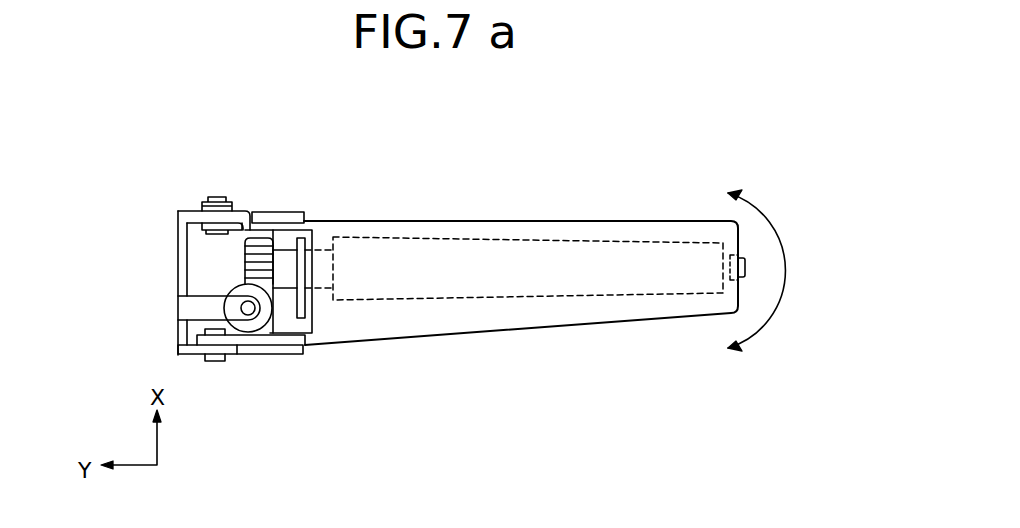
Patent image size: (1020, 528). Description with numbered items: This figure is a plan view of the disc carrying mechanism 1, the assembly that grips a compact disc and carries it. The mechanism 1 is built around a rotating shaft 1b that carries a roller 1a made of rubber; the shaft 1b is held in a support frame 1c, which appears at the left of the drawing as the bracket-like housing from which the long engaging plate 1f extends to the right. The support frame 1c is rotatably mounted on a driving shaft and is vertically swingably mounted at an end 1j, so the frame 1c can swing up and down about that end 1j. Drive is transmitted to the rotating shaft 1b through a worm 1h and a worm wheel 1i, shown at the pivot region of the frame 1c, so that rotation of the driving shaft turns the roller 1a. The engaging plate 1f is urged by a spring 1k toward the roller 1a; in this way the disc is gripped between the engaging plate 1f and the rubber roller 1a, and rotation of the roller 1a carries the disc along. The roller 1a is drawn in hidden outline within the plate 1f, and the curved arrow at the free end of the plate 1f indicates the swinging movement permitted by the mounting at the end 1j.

The disc carrying mechanism 1 is at (402, 174).
The roller 1a is at (478, 237).
The rotating shaft 1b is at (286, 257).
The support frame 1c is at (176, 278).
The engaging plate 1f is at (545, 320).
The worm 1h is at (265, 328).
The worm wheel 1i is at (260, 240).
The end 1j is at (212, 197).
The spring 1k is at (238, 210).